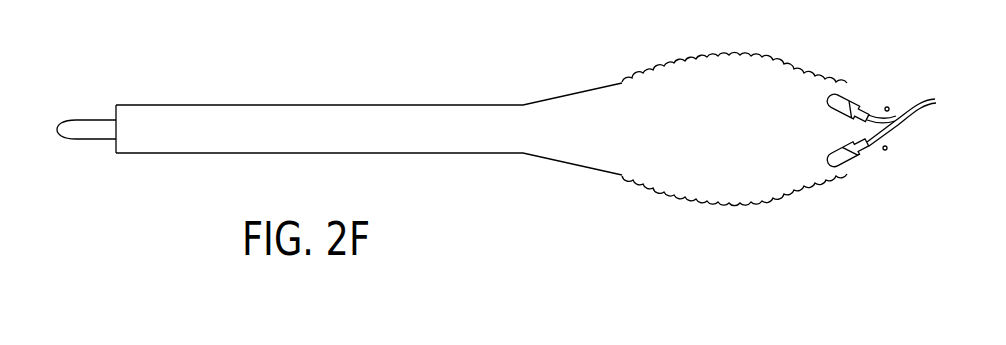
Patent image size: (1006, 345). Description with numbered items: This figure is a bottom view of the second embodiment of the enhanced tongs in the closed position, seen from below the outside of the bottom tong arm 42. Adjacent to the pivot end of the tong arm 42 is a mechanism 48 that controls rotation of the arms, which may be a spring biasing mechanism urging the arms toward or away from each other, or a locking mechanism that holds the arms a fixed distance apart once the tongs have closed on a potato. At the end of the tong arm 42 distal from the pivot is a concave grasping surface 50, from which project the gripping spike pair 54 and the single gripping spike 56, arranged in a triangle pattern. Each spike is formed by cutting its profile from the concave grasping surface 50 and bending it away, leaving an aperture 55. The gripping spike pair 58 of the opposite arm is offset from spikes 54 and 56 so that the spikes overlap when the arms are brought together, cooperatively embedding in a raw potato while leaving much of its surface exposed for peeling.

The tong arm 42 is at (333, 104).
The mechanism 48 is at (96, 120).
The concave grasping surface 50 is at (722, 200).
The gripping spike pair 54 is at (935, 101).
The aperture 55 is at (851, 98).
The gripping spike 56 is at (900, 128).
The gripping spike pair 58 is at (888, 107).